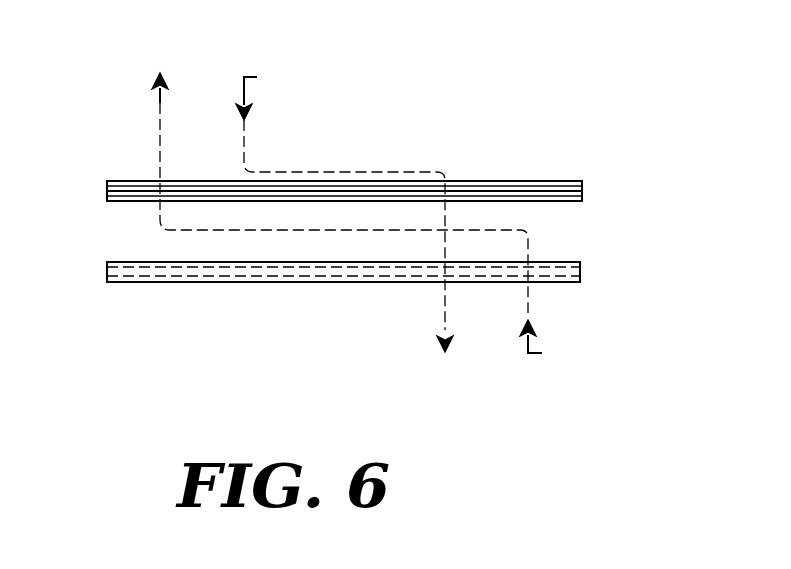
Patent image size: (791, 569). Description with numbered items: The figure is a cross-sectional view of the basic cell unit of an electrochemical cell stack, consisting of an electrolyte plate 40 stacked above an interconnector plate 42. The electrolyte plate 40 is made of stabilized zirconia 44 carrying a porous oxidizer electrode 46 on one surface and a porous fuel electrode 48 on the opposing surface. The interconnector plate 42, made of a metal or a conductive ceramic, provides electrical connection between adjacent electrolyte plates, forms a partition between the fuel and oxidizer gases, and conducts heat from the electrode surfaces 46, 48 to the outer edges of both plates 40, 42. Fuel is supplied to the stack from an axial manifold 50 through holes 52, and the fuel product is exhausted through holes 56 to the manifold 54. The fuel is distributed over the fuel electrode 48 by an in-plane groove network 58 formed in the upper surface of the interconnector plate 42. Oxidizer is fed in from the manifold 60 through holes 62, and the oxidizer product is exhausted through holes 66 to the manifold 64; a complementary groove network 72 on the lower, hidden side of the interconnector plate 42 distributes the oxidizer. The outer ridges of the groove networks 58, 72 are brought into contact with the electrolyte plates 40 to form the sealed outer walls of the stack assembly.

The electrolyte plate 40 is at (588, 192).
The interconnector plate 42 is at (588, 272).
The stabilized zirconia 44 is at (107, 188).
The porous oxidizer electrode 46 is at (138, 181).
The porous fuel electrode 48 is at (107, 197).
The axial manifold 50 is at (586, 350).
The holes 52 is at (527, 181).
The manifold 54 is at (175, 65).
The holes 56 is at (163, 181).
The in-plane groove network 58 is at (116, 262).
The manifold 60 is at (302, 88).
The holes 62 is at (250, 178).
The manifold 64 is at (450, 382).
The holes 66 is at (445, 181).
The groove network 72 is at (120, 283).